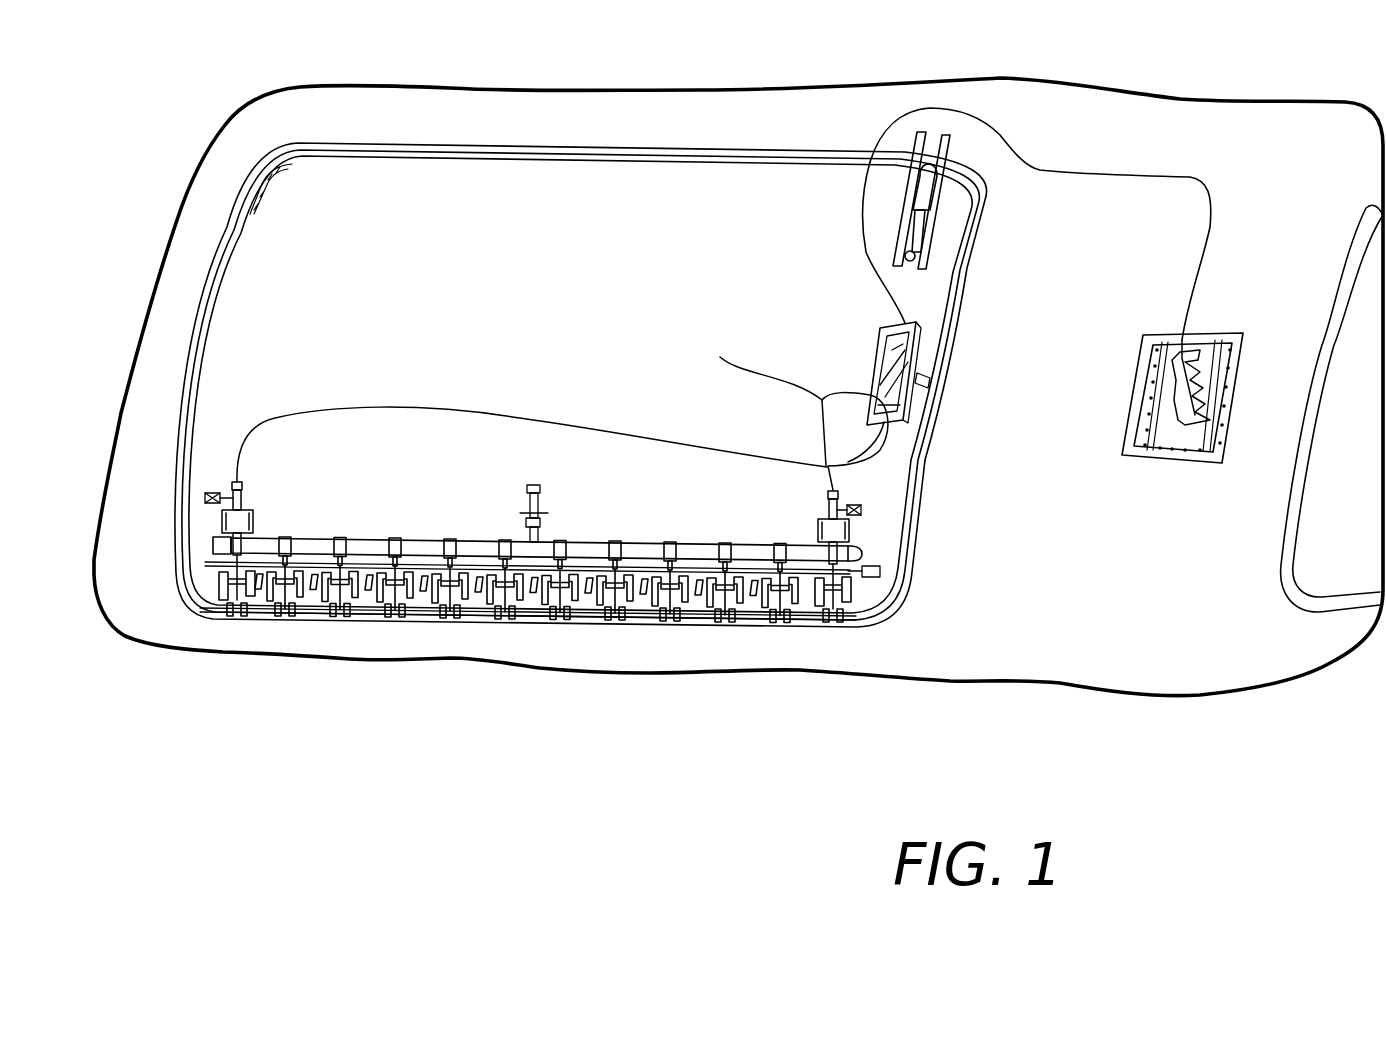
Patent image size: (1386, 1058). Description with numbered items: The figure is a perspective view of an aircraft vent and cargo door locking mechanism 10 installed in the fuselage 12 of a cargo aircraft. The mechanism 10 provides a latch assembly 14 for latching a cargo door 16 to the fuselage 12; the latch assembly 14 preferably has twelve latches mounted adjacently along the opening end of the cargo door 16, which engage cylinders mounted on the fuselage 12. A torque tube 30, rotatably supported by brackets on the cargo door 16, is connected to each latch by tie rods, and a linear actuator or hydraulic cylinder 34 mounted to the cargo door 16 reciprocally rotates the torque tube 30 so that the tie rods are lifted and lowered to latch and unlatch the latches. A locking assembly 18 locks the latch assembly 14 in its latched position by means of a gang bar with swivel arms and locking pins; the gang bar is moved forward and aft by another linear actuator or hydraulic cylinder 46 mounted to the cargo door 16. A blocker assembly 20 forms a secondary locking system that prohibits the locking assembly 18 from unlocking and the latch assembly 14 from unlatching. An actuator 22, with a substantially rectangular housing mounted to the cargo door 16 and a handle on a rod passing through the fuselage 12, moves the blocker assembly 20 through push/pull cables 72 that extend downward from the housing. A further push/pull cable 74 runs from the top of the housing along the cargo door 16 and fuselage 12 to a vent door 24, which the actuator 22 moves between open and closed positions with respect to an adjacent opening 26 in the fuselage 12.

The aircraft vent and cargo door locking mechanism 10 is at (1195, 129).
The fuselage 12 is at (1100, 692).
The latch assembly 14 is at (625, 587).
The cargo door 16 is at (520, 231).
The locking assembly 18 is at (868, 559).
The blocker assembly 20 is at (853, 536).
The actuator 22 is at (877, 348).
The vent door 24 is at (1196, 418).
The opening 26 is at (1168, 420).
The torque tube 30 is at (307, 538).
The linear actuator or hydraulic cylinder 34 is at (543, 490).
The linear actuator or hydraulic cylinder 46 is at (887, 570).
The push/pull cable 72 is at (283, 422).
The push/pull cable 74 is at (1087, 176).